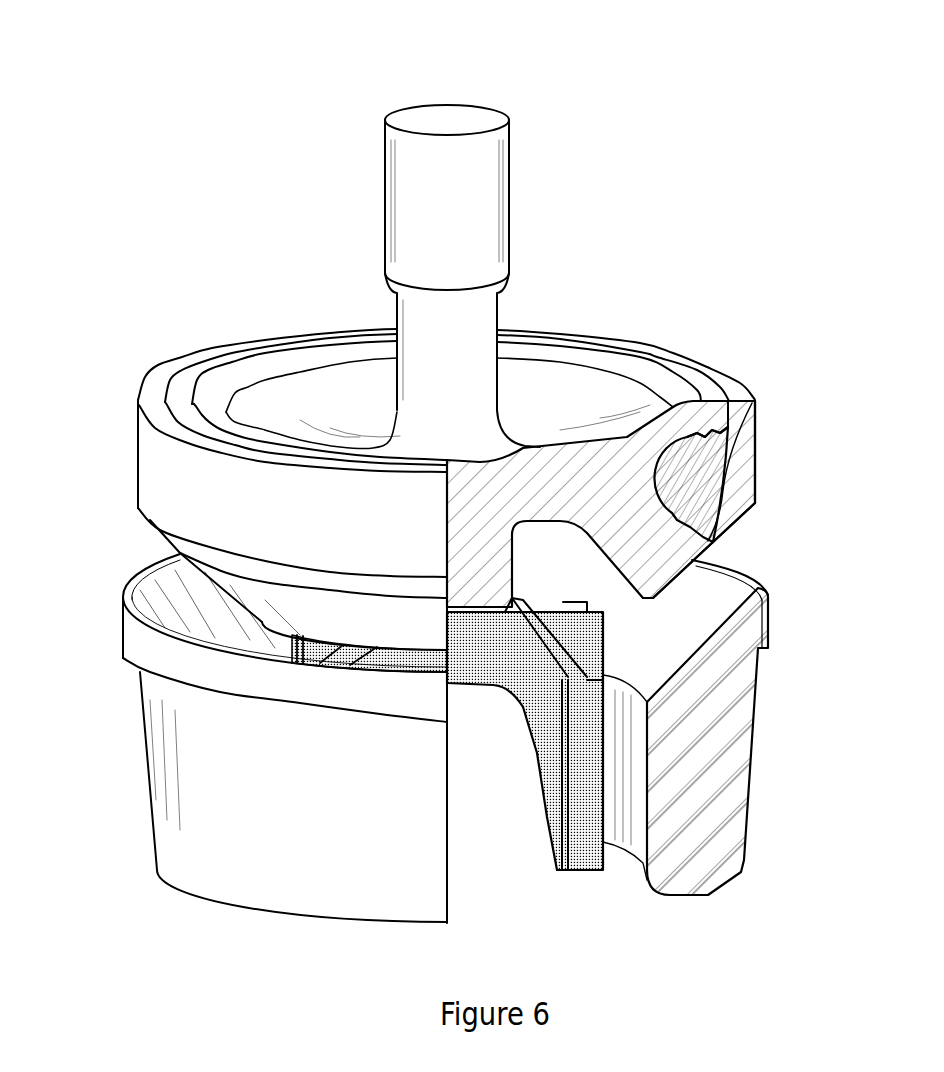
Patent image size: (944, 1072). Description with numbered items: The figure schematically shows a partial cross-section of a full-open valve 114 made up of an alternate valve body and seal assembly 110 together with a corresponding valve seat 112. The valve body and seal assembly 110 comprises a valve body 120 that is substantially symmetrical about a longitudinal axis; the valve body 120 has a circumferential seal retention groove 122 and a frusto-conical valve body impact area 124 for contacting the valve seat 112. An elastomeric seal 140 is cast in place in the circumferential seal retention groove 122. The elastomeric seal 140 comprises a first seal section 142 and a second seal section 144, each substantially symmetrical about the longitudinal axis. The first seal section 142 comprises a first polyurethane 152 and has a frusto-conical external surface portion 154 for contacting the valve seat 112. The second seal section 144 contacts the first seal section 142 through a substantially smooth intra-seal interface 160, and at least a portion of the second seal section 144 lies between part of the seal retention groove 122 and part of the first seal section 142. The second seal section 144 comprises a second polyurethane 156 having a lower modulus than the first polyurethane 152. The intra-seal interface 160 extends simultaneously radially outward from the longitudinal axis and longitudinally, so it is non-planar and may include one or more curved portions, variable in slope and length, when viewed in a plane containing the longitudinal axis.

The valve body and seal assembly 110 is at (240, 250).
The valve seat 112 is at (681, 736).
The full-open valve 114 is at (136, 78).
The valve body 120 is at (514, 499).
The circumferential seal retention groove 122 is at (687, 437).
The frusto-conical valve body impact area 124 is at (688, 568).
The elastomeric seal 140 is at (665, 326).
The first seal section 142 is at (757, 433).
The second seal section 144 is at (750, 397).
The first polyurethane 152 is at (730, 500).
The frusto-conical external surface portion 154 is at (743, 520).
The second polyurethane 156 is at (686, 471).
The intra-seal interface 160 is at (757, 453).